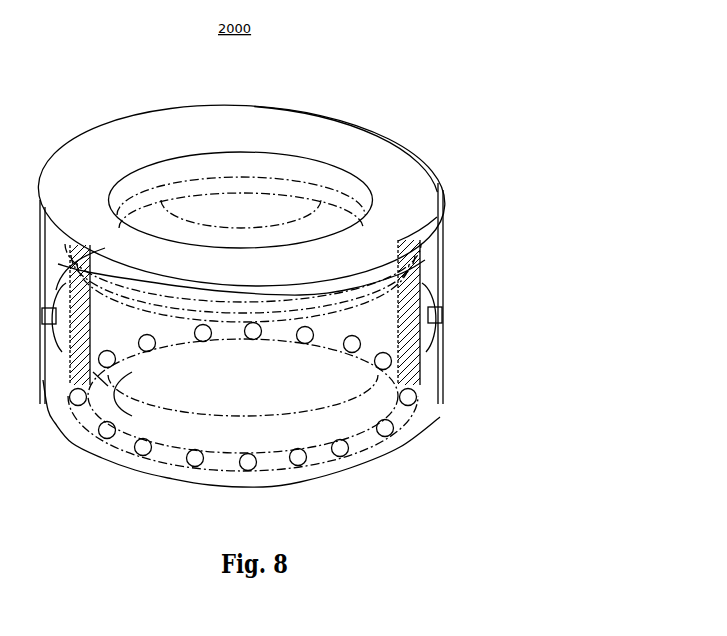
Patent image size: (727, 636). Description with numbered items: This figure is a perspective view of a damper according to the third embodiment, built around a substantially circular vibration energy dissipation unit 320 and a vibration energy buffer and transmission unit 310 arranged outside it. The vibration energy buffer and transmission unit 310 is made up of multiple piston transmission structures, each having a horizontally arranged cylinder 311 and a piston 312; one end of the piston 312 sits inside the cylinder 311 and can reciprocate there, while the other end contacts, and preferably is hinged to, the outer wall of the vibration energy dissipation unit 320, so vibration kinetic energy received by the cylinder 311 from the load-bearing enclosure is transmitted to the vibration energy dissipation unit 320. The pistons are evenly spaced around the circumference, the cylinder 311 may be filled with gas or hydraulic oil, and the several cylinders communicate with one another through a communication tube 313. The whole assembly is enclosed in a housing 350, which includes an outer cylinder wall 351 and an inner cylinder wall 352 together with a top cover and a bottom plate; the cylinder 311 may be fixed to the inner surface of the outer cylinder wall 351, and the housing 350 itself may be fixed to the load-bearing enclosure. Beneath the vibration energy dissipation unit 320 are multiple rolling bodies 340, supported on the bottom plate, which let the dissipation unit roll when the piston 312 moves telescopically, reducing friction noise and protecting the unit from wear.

The housing 350 is at (315, 123).
The outer cylinder wall 351 is at (383, 135).
The inner cylinder wall 352 is at (212, 148).
The vibration energy dissipation unit 320 is at (432, 227).
The vibration energy buffer and transmission unit 310 is at (312, 312).
The cylinder 311 is at (443, 318).
The piston 312 is at (448, 327).
The communication tube 313 is at (432, 297).
The rolling bodies 340 is at (418, 401).